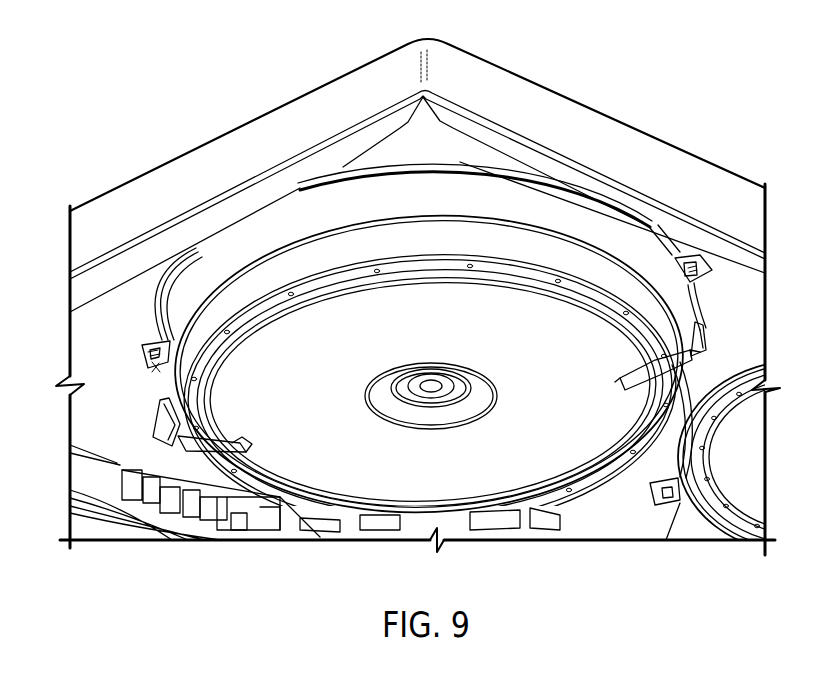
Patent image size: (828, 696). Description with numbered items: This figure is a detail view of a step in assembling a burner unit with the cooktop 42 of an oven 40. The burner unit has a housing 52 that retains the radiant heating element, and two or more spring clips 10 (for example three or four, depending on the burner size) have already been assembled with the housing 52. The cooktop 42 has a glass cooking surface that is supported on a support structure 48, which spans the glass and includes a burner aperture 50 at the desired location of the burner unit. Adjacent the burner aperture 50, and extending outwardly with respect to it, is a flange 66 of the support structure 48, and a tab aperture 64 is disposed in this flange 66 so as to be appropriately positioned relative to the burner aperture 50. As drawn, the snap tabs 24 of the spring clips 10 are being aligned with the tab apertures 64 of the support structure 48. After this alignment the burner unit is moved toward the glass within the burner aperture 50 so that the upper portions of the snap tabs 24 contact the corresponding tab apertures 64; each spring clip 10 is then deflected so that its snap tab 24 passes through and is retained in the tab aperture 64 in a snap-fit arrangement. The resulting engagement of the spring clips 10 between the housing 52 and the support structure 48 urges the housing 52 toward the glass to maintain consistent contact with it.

The spring clip 10 is at (157, 446).
The snap tab 24 is at (143, 413).
The oven 40 is at (574, 458).
The cooktop 42 is at (634, 91).
The support structure 48 is at (737, 282).
The aperture 50 is at (467, 162).
The housing 52 is at (537, 359).
The tab aperture 64 is at (158, 362).
The flange 66 is at (164, 352).